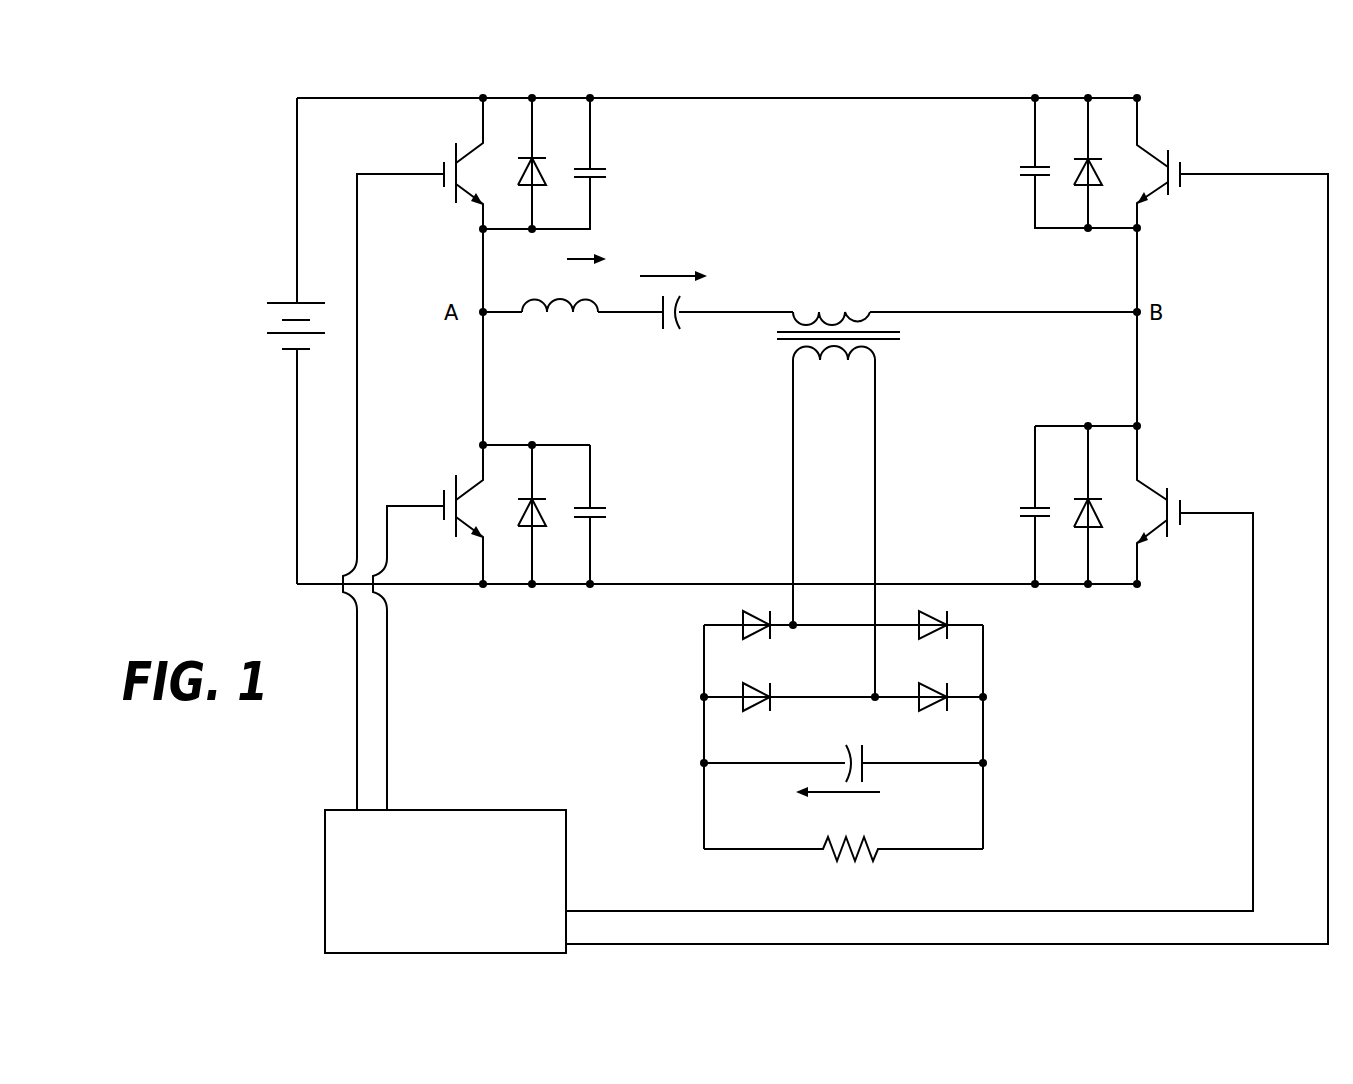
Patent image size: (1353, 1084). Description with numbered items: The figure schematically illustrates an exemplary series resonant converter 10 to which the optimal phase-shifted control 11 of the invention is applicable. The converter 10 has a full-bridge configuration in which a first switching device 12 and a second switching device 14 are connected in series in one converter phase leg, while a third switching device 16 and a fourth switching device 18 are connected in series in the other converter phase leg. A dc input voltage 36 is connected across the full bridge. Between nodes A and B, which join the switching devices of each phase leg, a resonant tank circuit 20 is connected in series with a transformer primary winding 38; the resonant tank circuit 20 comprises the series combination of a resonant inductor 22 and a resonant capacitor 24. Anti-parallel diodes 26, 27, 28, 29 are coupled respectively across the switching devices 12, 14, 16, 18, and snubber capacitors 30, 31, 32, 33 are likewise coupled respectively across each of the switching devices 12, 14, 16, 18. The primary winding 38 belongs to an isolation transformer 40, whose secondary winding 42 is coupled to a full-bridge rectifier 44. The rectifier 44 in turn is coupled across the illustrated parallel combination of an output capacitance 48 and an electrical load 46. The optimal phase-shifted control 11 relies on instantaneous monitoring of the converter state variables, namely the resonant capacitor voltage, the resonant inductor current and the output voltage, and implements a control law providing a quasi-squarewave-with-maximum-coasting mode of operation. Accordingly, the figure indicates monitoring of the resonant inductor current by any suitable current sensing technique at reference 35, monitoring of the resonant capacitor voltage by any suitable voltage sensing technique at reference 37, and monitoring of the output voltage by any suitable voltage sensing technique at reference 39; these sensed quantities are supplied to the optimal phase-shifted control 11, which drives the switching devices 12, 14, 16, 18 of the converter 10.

The series resonant converter 10 is at (790, 147).
The optimal phase-shifted control 11 is at (538, 938).
The switching device Q1 12 is at (458, 200).
The switching device Q2 14 is at (458, 486).
The switching device Q3 16 is at (1170, 190).
The switching device Q4 18 is at (1172, 490).
The resonant tank circuit 20 is at (699, 226).
The resonant inductor 22 is at (538, 306).
The resonant capacitor 24 is at (660, 318).
The anti-parallel diode 26 is at (530, 164).
The anti-parallel diode 27 is at (530, 506).
The anti-parallel diode 28 is at (1082, 164).
The anti-parallel diode 29 is at (1084, 500).
The snubber capacitor 30 is at (592, 172).
The snubber capacitor 31 is at (592, 508).
The snubber capacitor 32 is at (1028, 167).
The snubber capacitor 33 is at (1028, 507).
The current sensing of resonant inductor current 35 is at (580, 258).
The dc input voltage 36 is at (306, 300).
The voltage sensing of resonant capacitor voltage 37 is at (690, 276).
The transformer primary winding 38 is at (862, 306).
The voltage sensing of output voltage 39 is at (808, 798).
The isolation transformer 40 is at (884, 342).
The secondary winding 42 is at (856, 352).
The full-bridge rectifier 44 is at (745, 669).
The electrical load 46 is at (878, 850).
The output capacitance 48 is at (866, 760).